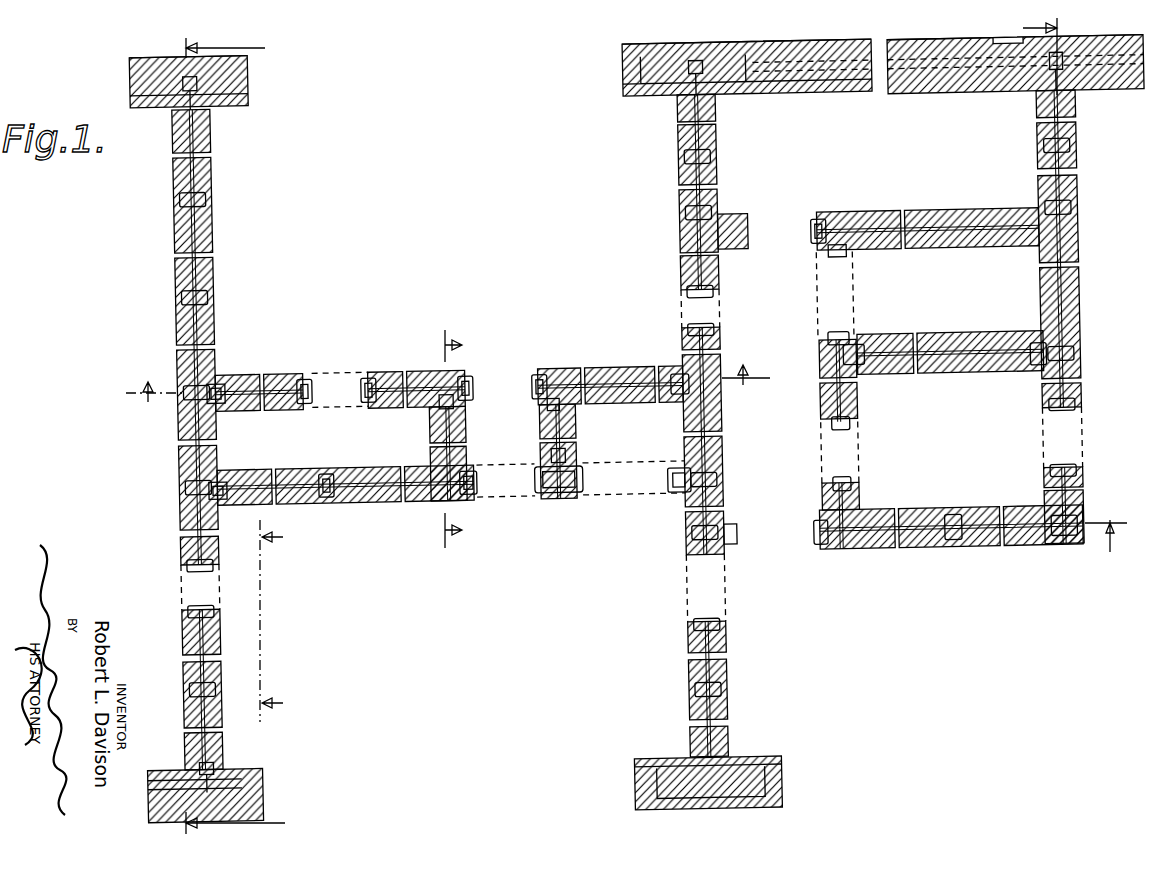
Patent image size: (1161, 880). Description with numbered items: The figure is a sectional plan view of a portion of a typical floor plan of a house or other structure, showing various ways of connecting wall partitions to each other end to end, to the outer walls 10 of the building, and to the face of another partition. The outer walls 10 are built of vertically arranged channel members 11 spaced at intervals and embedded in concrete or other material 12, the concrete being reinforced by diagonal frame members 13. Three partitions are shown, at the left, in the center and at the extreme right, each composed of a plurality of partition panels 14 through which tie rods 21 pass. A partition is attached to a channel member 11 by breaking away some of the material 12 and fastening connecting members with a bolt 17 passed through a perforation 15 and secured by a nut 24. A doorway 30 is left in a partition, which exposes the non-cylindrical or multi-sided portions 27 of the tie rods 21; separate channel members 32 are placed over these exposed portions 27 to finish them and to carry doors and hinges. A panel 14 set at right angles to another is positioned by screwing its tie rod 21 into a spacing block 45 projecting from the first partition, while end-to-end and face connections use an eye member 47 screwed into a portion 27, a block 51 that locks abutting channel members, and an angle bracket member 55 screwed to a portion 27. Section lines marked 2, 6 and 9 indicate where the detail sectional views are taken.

The outer walls 10 is at (786, 765).
The channel members 11 is at (756, 762).
The concrete or other material 12 is at (788, 95).
The diagonal frame members 13 is at (1032, 546).
The partition panels 14 is at (950, 245).
The perforation 15 is at (253, 436).
The bolt 17 is at (1052, 128).
The tie rod 21 is at (830, 372).
The nut 24 is at (152, 790).
The non-cylindrical or multi-sided portions 27 is at (700, 60).
The doorway 30 is at (1076, 442).
The channel members 32 is at (814, 236).
The spacing block 45 is at (732, 530).
The eye member 47 is at (830, 345).
The block 51 is at (220, 470).
The angle bracket member 55 is at (690, 500).
The section line 2 is at (283, 621).
The section line 6 is at (439, 439).
The section line 9 is at (448, 395).